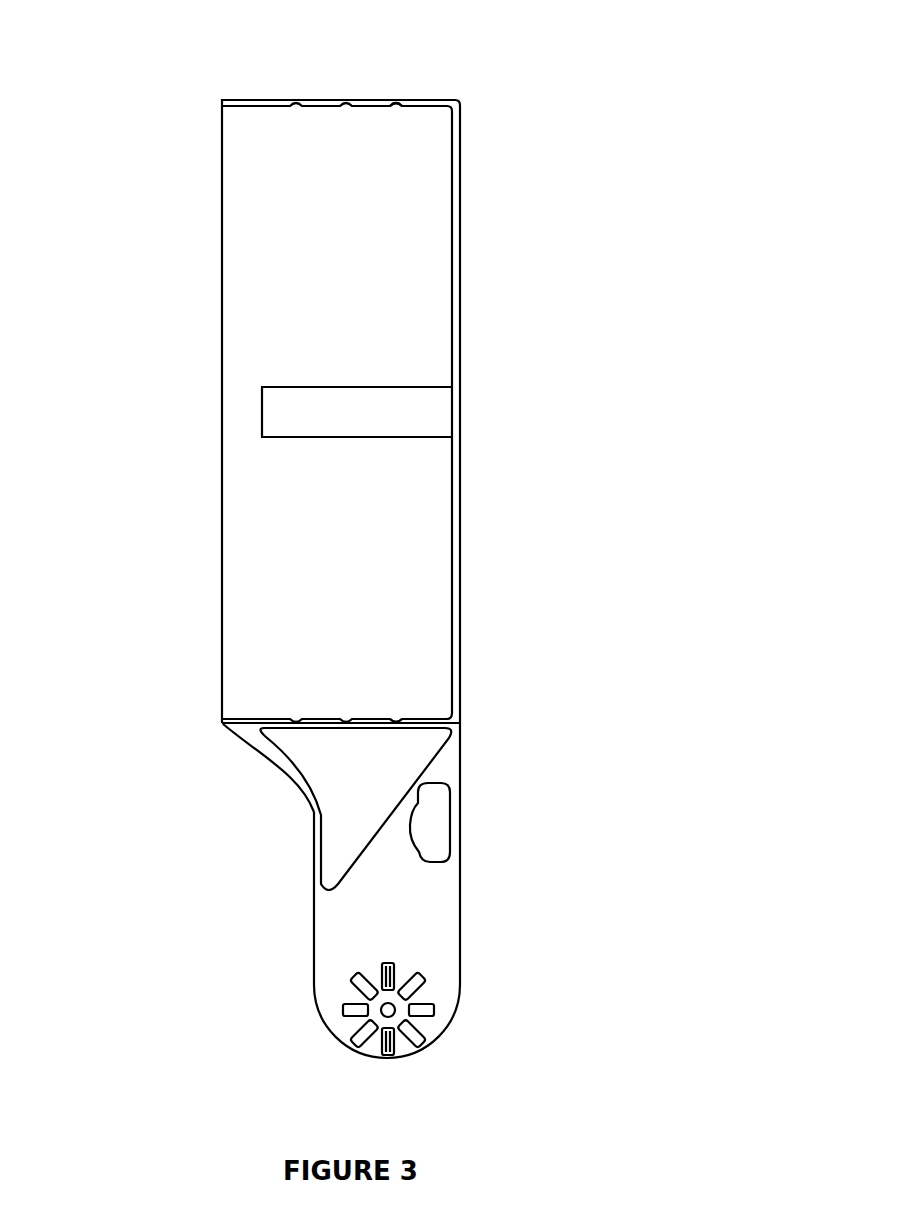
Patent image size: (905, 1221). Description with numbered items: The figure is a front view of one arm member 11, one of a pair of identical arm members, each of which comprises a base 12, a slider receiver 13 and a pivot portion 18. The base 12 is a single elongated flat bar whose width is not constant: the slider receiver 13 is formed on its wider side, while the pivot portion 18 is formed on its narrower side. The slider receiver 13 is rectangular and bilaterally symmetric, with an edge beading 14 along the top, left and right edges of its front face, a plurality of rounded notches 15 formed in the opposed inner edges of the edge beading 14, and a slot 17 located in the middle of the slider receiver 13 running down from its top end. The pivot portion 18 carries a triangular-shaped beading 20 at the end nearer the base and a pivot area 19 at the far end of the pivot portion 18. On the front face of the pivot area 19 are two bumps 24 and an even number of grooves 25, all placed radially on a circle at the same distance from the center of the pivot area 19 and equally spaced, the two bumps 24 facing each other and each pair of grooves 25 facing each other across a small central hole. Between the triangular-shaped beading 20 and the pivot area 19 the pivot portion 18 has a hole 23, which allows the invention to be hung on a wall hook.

The arm member 11 is at (319, 548).
The base 12 is at (284, 607).
The slider receiver 13 is at (460, 292).
The edge beading 14 is at (258, 100).
The notches 15 is at (395, 100).
The slot 17 is at (290, 388).
The pivot portion 18 is at (466, 873).
The pivot area 19 is at (440, 1027).
The triangular-shaped beading 20 is at (310, 797).
The hole 23 is at (449, 812).
The bumps 24 is at (400, 965).
The grooves 25 is at (338, 1010).